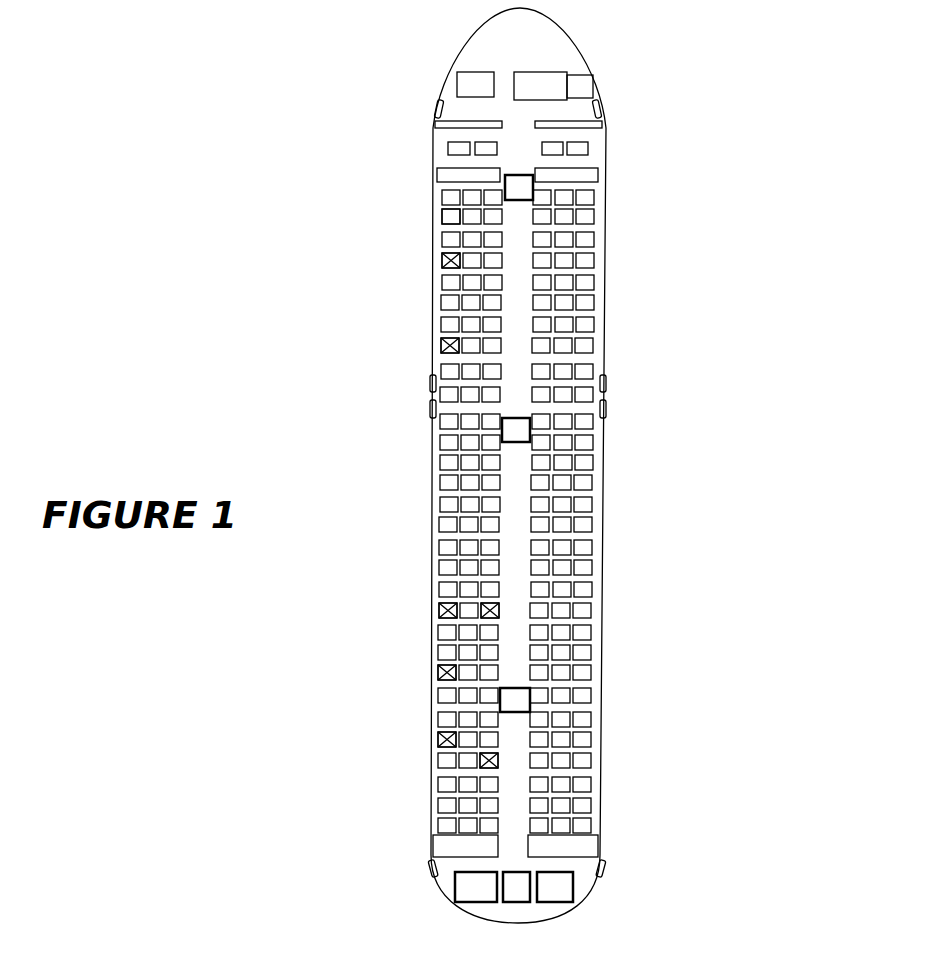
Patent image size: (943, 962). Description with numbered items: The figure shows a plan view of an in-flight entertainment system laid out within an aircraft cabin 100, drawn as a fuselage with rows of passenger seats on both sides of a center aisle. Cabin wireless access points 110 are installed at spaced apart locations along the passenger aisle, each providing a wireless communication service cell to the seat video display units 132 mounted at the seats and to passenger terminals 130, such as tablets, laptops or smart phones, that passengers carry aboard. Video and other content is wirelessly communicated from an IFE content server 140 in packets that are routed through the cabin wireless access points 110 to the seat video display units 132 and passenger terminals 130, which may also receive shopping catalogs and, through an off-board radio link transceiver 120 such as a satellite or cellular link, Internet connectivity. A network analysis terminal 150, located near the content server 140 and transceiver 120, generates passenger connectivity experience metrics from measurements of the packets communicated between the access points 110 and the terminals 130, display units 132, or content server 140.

The aircraft cabin 100 is at (465, 53).
The cabin wireless access point (CWAP) 110 is at (533, 186).
The off-board radio link transceiver 120 is at (520, 900).
The passenger terminal 130 is at (445, 254).
The seat video display unit (SVDU) 132 is at (445, 212).
The IFE content server 140 is at (573, 888).
The network analysis terminal 150 is at (457, 886).